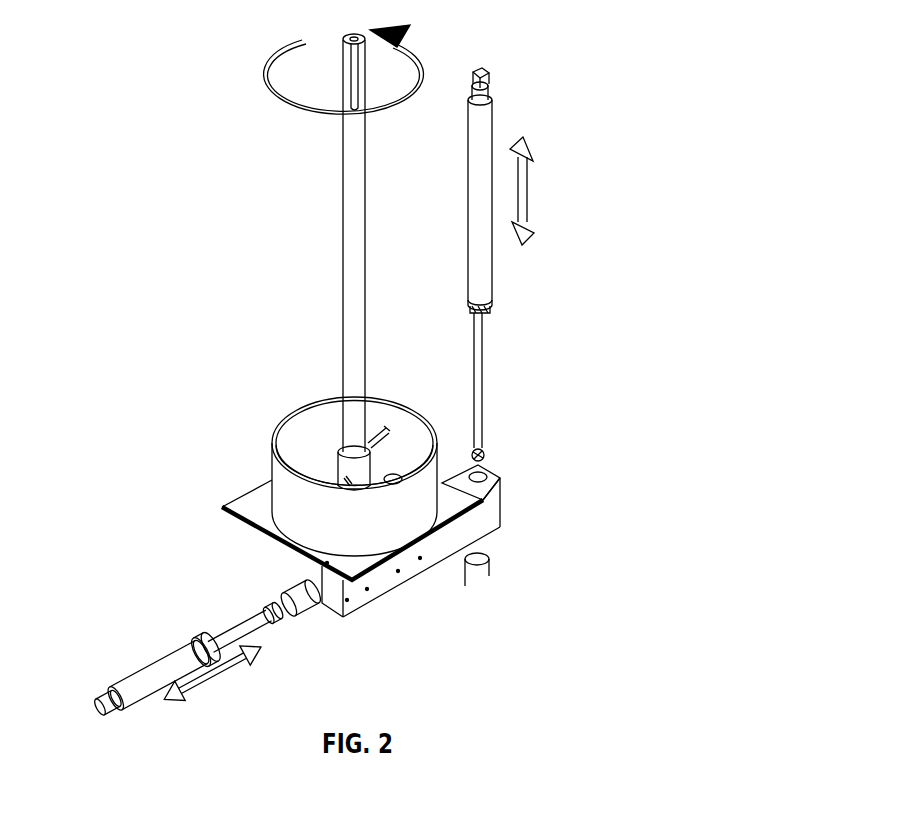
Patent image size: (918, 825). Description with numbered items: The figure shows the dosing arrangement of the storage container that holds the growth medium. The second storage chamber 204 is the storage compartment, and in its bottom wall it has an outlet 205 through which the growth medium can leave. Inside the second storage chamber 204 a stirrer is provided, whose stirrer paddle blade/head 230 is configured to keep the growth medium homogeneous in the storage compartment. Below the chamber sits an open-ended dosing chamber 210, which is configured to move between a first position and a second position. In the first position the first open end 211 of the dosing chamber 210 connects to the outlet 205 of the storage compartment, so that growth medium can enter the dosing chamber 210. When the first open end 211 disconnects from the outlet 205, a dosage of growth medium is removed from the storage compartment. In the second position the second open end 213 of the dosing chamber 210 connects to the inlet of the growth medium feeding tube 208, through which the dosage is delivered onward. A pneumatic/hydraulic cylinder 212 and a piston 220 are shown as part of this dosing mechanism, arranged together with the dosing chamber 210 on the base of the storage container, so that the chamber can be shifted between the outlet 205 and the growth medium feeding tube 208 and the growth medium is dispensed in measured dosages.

The second storage chamber 204 is at (285, 495).
The outlet 205 is at (400, 481).
The growth medium feeding tube 208 is at (490, 561).
The dosing chamber 210 is at (383, 577).
The first open end 211 is at (500, 474).
The pneumatic/hydraulic cylinder 212 is at (180, 660).
The second open end 213 is at (500, 535).
The piston 220 is at (482, 388).
The stirrer paddle blade/head 230 is at (373, 436).